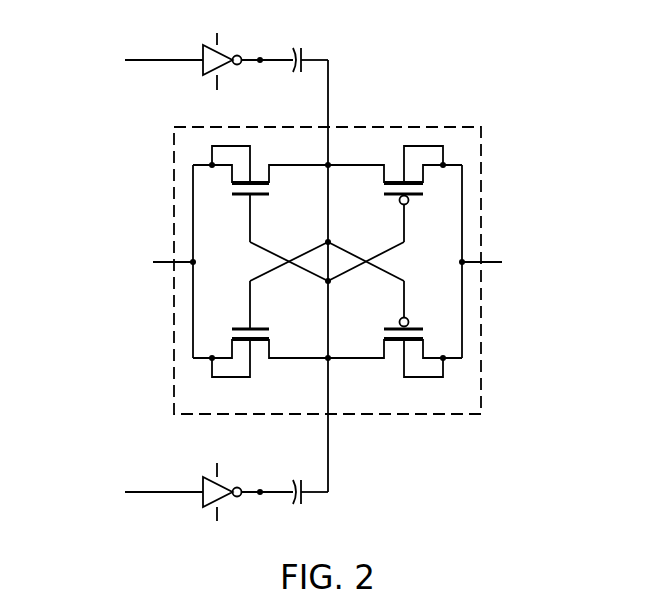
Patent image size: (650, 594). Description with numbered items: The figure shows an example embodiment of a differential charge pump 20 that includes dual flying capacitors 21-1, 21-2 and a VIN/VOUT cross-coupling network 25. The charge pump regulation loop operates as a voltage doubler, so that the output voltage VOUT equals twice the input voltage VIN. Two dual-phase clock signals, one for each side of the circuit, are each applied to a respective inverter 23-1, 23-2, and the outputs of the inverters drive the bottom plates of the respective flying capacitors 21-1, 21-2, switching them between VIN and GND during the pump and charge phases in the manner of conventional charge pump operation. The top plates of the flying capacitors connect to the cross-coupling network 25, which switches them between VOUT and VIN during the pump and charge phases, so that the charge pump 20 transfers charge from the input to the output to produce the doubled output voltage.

The differential charge pump 20 is at (458, 57).
The VIN/VOUT cross-coupling network 25 is at (410, 124).
The inverter 23-1 is at (203, 50).
The inverter 23-2 is at (203, 500).
The flying capacitor 21-1 is at (297, 47).
The flying capacitor 21-2 is at (297, 505).